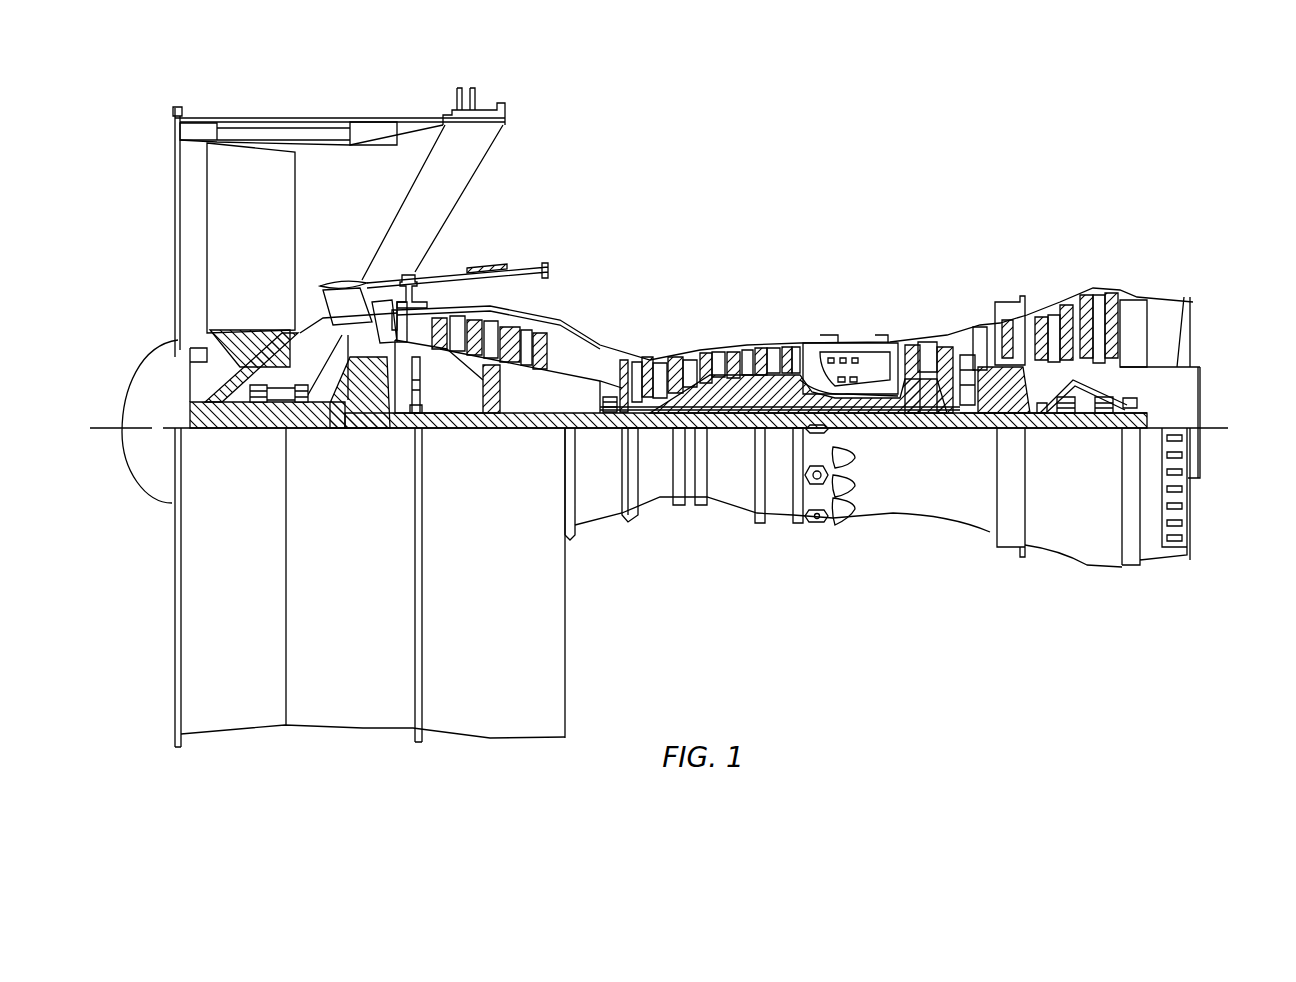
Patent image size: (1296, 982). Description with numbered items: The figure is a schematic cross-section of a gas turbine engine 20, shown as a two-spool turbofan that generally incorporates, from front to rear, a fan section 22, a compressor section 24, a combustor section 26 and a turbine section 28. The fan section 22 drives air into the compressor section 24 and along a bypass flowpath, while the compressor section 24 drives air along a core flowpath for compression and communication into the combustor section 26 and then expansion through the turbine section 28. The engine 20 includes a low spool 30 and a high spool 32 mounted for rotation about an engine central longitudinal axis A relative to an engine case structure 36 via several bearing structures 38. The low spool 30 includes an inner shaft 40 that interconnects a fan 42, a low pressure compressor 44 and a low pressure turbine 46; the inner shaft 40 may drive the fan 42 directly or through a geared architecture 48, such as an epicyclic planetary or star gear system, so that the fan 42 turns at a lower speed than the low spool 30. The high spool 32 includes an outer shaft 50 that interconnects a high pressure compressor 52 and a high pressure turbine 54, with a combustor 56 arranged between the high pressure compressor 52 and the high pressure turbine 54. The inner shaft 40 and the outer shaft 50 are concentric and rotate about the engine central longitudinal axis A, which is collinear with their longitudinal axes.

The gas turbine engine 20 is at (965, 165).
The fan section 22 is at (415, 98).
The compressor section 24 is at (425, 228).
The combustor section 26 is at (913, 228).
The turbine section 28 is at (1130, 228).
The low spool 30 is at (740, 437).
The high spool 32 is at (772, 368).
The engine case structure 36 is at (782, 522).
The bearing structures 38 is at (208, 482).
The inner shaft 40 is at (590, 433).
The fan 42 is at (228, 258).
The low pressure compressor 44 is at (493, 322).
The low pressure turbine 46 is at (1063, 310).
The geared architecture 48 is at (355, 405).
The outer shaft 50 is at (860, 425).
The high pressure compressor 52 is at (715, 390).
The high pressure turbine 54 is at (927, 337).
The combustor 56 is at (860, 370).
The engine central longitudinal axis A is at (1212, 432).